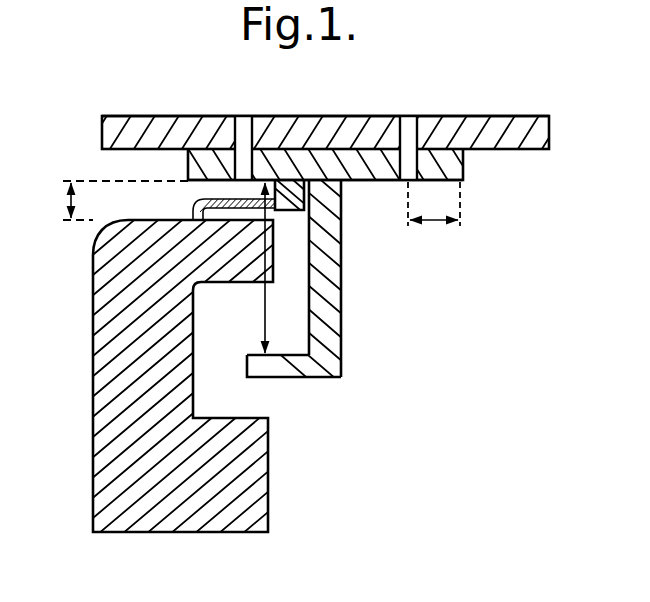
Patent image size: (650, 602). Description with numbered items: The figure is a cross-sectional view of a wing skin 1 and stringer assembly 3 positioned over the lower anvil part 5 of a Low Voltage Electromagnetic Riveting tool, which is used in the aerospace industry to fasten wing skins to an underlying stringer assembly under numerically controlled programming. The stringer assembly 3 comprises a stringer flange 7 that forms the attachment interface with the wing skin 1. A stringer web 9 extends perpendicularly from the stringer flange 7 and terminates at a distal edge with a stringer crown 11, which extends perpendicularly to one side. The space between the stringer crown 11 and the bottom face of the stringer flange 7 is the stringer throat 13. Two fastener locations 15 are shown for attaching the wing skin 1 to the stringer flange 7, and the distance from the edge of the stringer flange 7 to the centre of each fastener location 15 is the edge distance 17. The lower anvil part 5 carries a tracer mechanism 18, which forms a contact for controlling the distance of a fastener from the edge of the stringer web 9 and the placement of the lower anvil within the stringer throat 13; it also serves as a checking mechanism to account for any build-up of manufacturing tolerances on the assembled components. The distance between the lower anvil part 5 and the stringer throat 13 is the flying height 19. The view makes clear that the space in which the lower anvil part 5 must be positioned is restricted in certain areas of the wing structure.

The wing skin 1 is at (549, 133).
The stringer assembly 3 is at (341, 262).
The lower anvil part 5 is at (93, 467).
The stringer flange 7 is at (463, 166).
The stringer web 9 is at (335, 214).
The stringer crown 11 is at (278, 377).
The stringer throat 13 is at (280, 318).
The fastener locations 15 is at (395, 114).
The edge distance 17 is at (438, 222).
The tracer mechanism 18 is at (198, 213).
The flying height 19 is at (68, 200).